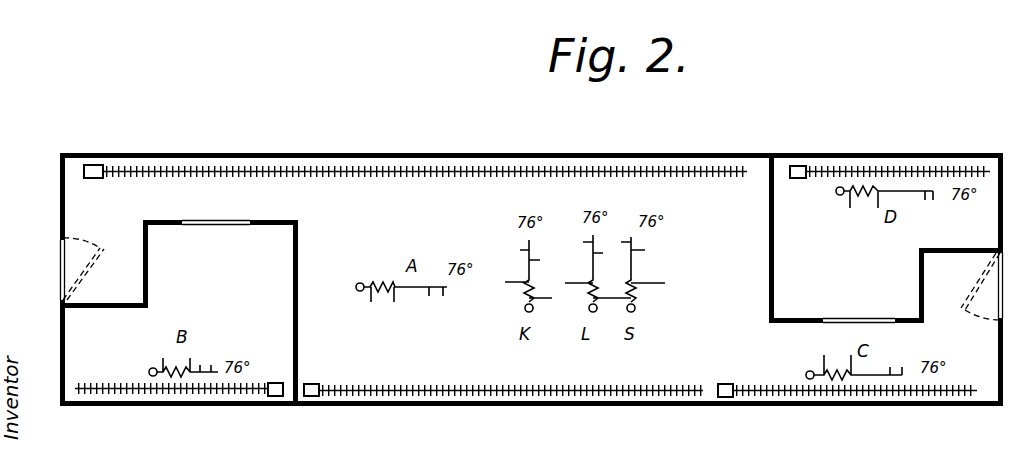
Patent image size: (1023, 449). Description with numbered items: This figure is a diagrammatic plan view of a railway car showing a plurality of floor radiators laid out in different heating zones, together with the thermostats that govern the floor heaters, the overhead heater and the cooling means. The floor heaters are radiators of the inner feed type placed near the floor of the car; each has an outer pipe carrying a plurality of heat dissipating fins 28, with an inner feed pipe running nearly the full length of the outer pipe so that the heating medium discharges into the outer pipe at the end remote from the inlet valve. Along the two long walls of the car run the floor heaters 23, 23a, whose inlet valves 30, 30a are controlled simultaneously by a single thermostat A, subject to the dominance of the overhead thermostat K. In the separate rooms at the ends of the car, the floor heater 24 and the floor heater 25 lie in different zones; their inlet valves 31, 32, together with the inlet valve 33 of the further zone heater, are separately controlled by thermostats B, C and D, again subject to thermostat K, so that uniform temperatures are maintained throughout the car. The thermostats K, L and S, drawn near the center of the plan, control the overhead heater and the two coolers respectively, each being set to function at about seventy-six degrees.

The floor heater 23 is at (378, 176).
The floor heater 23a is at (421, 386).
The floor heater 24 is at (213, 393).
The floor heater 25 is at (802, 393).
The heat dissipating fins 28 is at (886, 168).
The inlet valve 30 is at (96, 165).
The inlet valve 30a is at (317, 384).
The inlet valve 31 is at (275, 396).
The inlet valve 32 is at (730, 383).
The inlet valve 33 is at (803, 166).